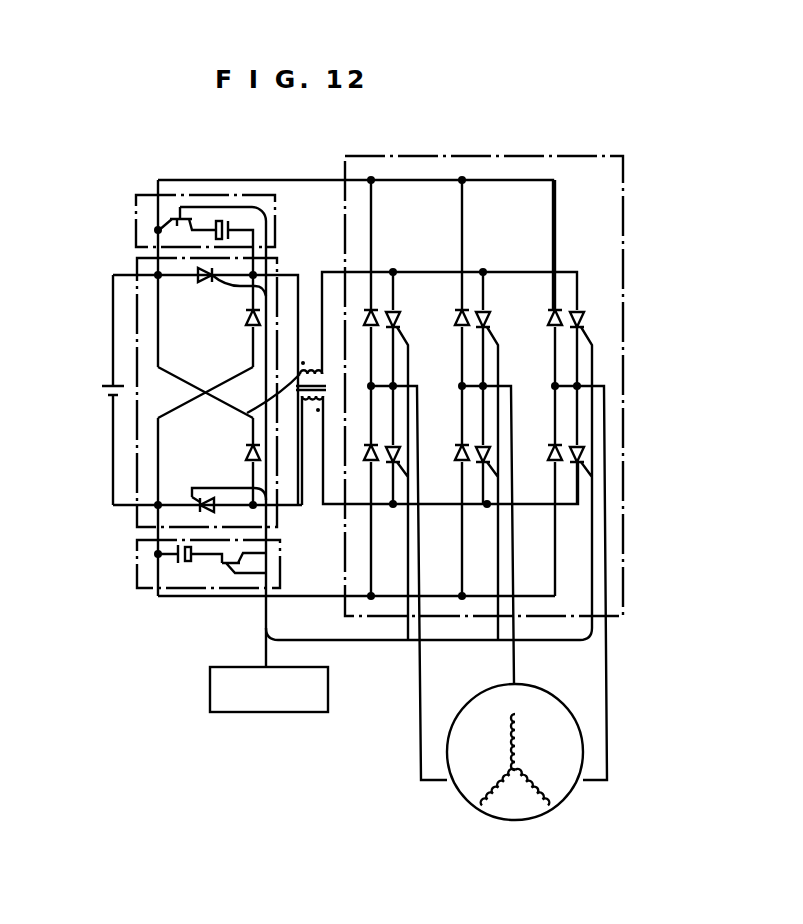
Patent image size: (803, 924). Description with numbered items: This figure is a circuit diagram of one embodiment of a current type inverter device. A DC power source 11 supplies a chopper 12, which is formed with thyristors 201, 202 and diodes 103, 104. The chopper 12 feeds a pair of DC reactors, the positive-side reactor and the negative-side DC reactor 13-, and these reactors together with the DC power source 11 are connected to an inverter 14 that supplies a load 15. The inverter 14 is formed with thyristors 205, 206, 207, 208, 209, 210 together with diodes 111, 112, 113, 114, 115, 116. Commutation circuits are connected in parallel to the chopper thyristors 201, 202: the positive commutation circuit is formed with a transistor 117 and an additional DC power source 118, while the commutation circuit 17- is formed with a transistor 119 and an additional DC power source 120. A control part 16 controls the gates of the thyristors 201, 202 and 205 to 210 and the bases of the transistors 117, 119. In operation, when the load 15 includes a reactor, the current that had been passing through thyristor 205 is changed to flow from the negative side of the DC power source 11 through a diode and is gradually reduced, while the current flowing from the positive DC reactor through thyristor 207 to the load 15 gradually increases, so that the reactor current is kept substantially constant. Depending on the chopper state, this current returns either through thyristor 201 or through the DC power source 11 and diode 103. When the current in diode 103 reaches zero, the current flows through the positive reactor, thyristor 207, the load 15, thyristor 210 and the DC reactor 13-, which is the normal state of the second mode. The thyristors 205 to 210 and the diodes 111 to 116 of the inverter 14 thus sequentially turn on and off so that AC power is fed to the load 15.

The DC power source 11 is at (111, 392).
The chopper 12 is at (279, 269).
The DC reactor 13- is at (325, 450).
The inverter 14 is at (623, 200).
The load 15 is at (546, 820).
The control part 16 is at (280, 712).
The commutation circuit 17- is at (149, 590).
The diode 103 is at (247, 328).
The diode 104 is at (243, 463).
The diode 111 is at (357, 310).
The diode 112 is at (363, 467).
The diode 113 is at (456, 308).
The diode 114 is at (453, 467).
The diode 115 is at (558, 328).
The diode 116 is at (543, 463).
The transistor 117 is at (175, 231).
The additional DC power source 118 is at (217, 218).
The transistor 119 is at (225, 570).
The additional DC power source 120 is at (188, 568).
The thyristor 201 is at (212, 285).
The thyristor 202 is at (194, 493).
The thyristor 205 is at (400, 320).
The thyristor 206 is at (390, 463).
The thyristor 207 is at (494, 312).
The thyristor 208 is at (480, 463).
The thyristor 209 is at (587, 313).
The thyristor 210 is at (575, 464).